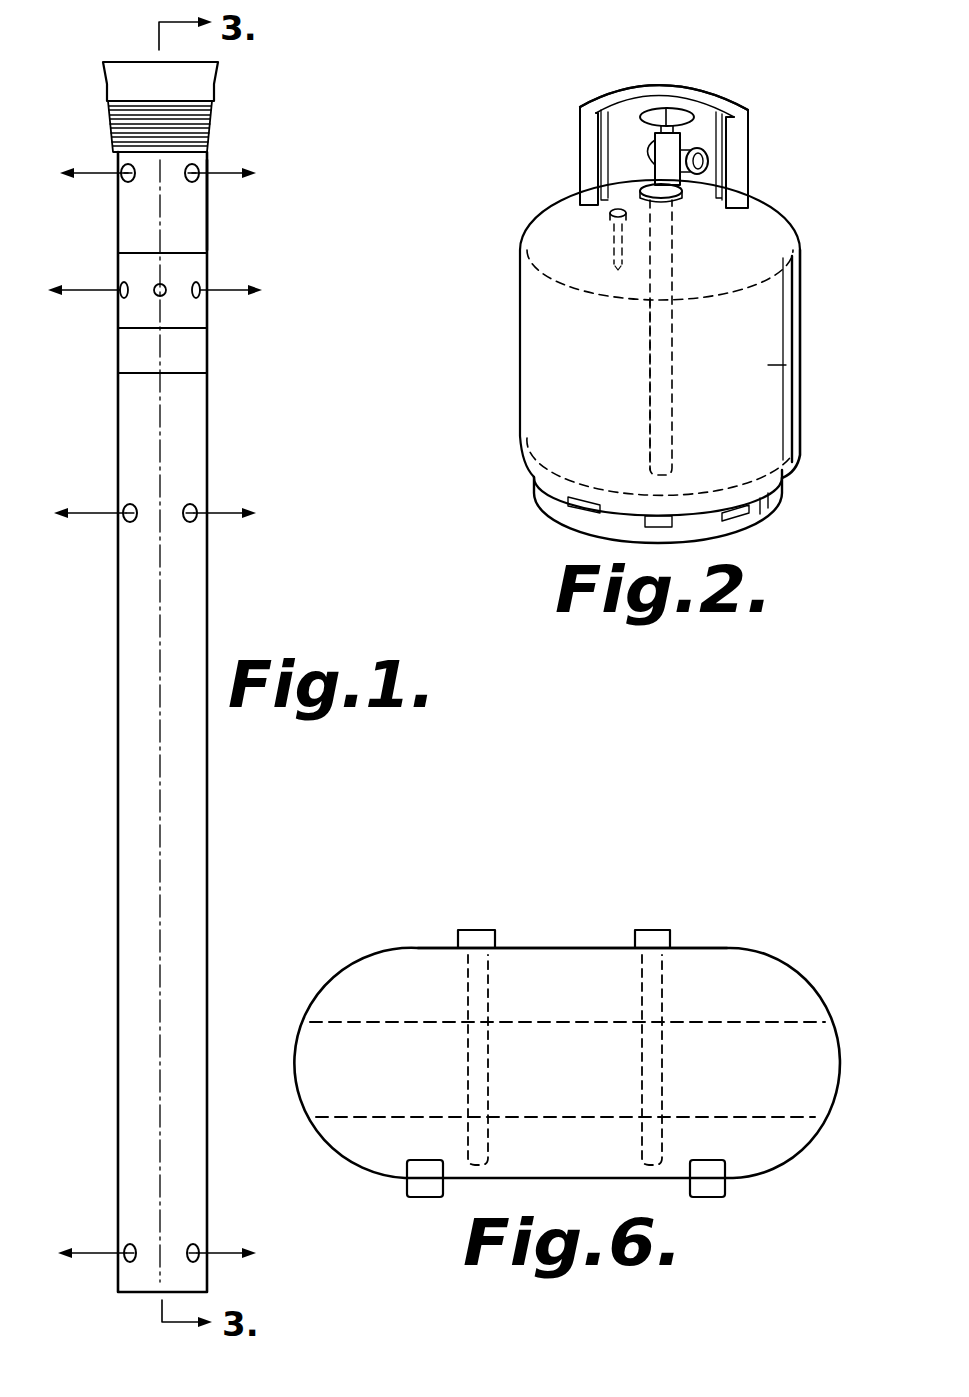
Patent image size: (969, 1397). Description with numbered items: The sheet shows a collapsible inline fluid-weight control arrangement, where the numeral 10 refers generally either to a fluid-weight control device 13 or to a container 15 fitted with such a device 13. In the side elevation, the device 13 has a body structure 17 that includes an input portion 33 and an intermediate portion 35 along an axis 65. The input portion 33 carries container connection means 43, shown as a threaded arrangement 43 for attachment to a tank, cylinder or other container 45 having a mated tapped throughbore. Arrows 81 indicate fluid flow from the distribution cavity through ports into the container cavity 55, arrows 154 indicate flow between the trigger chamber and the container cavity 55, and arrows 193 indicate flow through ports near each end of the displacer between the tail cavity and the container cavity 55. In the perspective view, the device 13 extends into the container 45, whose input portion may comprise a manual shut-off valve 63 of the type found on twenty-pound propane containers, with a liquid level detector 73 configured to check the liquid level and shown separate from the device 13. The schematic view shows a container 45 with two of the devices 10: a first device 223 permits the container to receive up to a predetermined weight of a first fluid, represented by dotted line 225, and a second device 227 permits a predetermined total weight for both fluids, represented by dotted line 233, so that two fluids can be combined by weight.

In FIG. 1, the fluid-weight control device or container having such a device 10 is at (244, 128).
In FIG. 2, the fluid-weight control device or container having such a device 10 is at (806, 152).
In FIG. 6, the fluid-weight control device or container having such a device 10 is at (764, 912).
In FIG. 1, the fluid-weight control device 13 is at (208, 214).
In FIG. 2, the fluid-weight control device 13 is at (672, 396).
In FIG. 6, the fluid-weight control device 13 is at (490, 927).
In FIG. 2, the container 15 is at (801, 268).
In FIG. 6, the container 15 is at (340, 943).
In FIG. 1, the body structure 17 is at (118, 653).
In FIG. 1, the input portion 33 is at (118, 214).
In FIG. 1, the intermediate portion 35 is at (207, 313).
In FIG. 1, the container connection means / threaded arrangement 43 is at (111, 134).
In FIG. 2, the container 45 is at (520, 336).
In FIG. 2, the container cavity 55 is at (803, 362).
In FIG. 2, the manual shut-off valve 63 is at (682, 112).
In FIG. 2, the axis 65 is at (648, 335).
In FIG. 2, the liquid level detector 73 is at (610, 213).
In FIG. 1, the arrows indicating fluid flow from ports 81 is at (216, 172).
In FIG. 1, the arrows indicating fluid flow through trigger chamber ports 154 is at (232, 289).
In FIG. 1, the arrows indicating fluid flow through tail cavity ports 193 is at (98, 512).
In FIG. 6, the first device 223 is at (470, 929).
In FIG. 6, the dotted line representing predetermined weight of first fluid 225 is at (598, 1113).
In FIG. 6, the second device 227 is at (645, 929).
In FIG. 6, the dotted line representing predetermined total weight 233 is at (525, 1020).